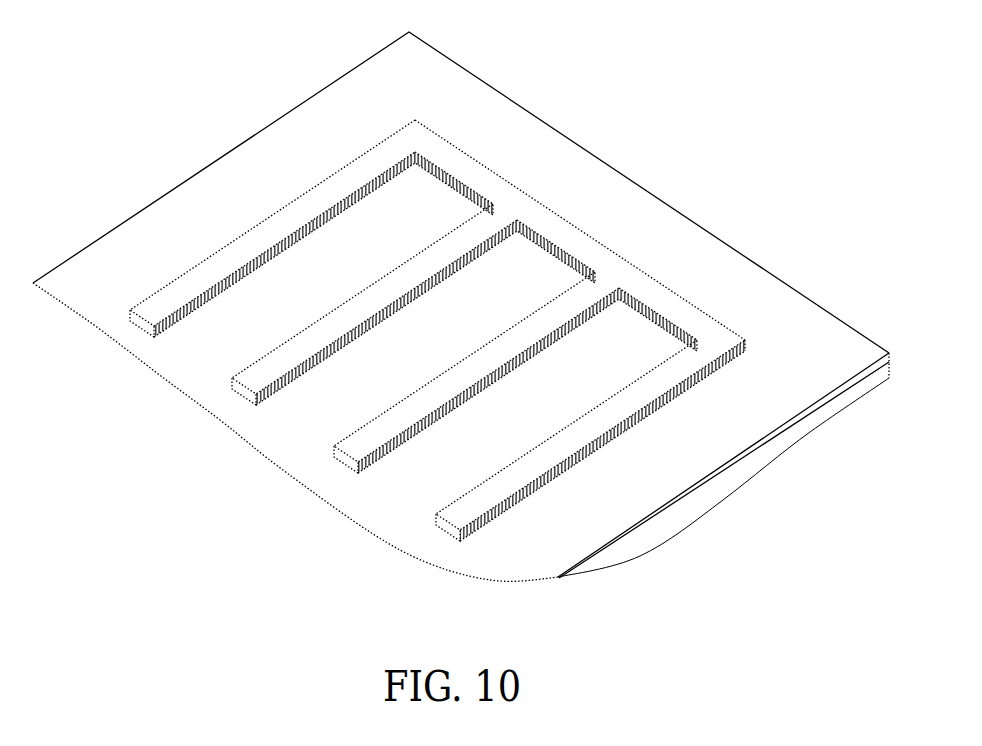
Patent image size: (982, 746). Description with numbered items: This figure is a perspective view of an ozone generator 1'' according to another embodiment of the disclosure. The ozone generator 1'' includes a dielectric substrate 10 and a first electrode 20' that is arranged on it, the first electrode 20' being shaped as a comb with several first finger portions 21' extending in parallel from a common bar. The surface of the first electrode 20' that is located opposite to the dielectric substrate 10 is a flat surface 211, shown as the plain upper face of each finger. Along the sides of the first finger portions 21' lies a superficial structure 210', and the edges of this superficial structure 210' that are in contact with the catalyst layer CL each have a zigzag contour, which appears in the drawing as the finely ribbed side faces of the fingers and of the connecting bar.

The ozone generator 1'' is at (461, 327).
The dielectric substrate 10 is at (683, 528).
The catalyst layer CL is at (415, 92).
The first electrode 20' is at (437, 348).
The first finger portions 21' is at (374, 264).
The flat surface 211 is at (435, 258).
The superficial structure 210' is at (602, 492).